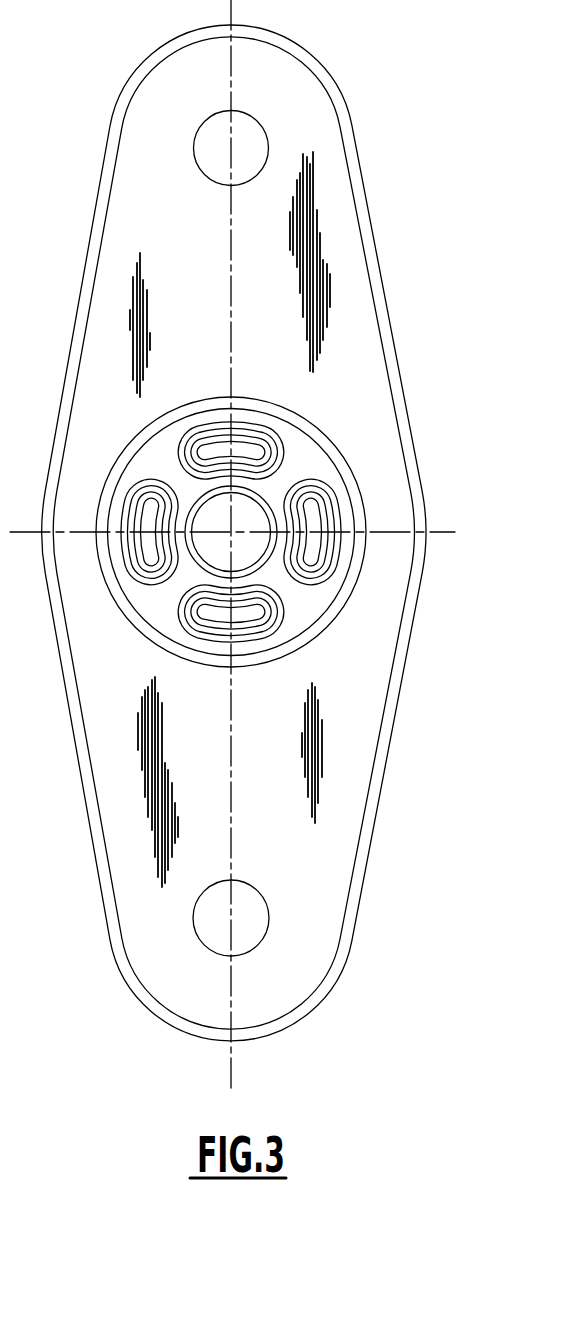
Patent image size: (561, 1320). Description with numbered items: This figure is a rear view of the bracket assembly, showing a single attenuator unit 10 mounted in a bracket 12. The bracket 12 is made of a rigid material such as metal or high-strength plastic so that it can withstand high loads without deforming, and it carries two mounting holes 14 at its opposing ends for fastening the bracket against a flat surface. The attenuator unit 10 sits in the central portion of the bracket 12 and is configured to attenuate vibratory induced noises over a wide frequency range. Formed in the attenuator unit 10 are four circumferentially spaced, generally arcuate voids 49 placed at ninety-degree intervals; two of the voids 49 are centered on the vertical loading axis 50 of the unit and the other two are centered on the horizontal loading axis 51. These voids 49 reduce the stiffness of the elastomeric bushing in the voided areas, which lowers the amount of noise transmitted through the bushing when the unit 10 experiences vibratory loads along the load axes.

The attenuator unit 10 is at (100, 467).
The bracket 12 is at (408, 694).
The mounting holes 14 is at (193, 143).
The voids 49 is at (198, 626).
The vertical loading axis 50 is at (232, 828).
The horizontal loading axis 51 is at (438, 533).